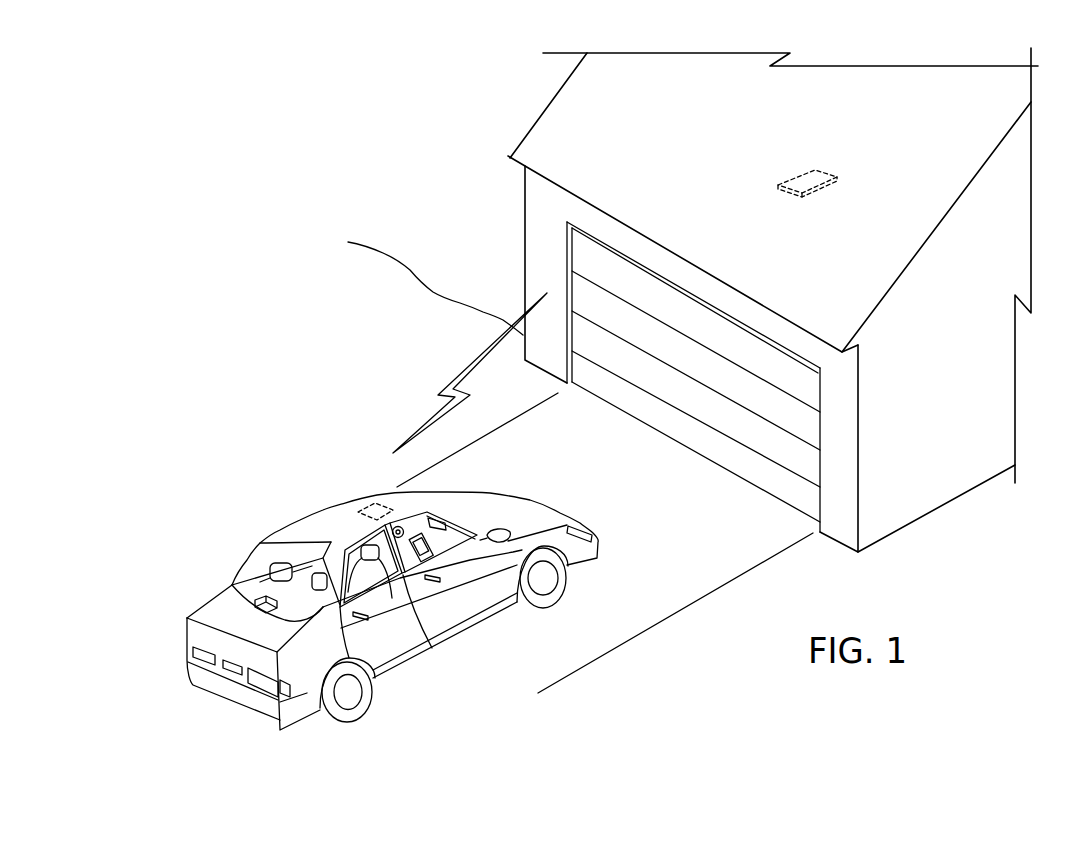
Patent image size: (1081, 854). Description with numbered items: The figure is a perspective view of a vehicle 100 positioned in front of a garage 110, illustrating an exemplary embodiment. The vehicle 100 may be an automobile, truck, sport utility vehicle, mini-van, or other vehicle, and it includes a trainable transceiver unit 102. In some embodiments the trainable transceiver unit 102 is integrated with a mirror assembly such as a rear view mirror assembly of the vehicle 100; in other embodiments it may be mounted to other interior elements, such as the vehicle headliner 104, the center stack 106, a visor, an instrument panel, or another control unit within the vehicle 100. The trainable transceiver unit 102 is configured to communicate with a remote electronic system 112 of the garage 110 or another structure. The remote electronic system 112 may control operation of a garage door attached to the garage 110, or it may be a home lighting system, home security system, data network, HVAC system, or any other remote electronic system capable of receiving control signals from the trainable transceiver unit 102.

The vehicle 100 is at (317, 374).
The trainable transceiver unit 102 is at (433, 517).
The vehicle headliner 104 is at (363, 509).
The center stack 106 is at (428, 547).
The garage 110 is at (947, 457).
The remote electronic system 112 is at (815, 175).